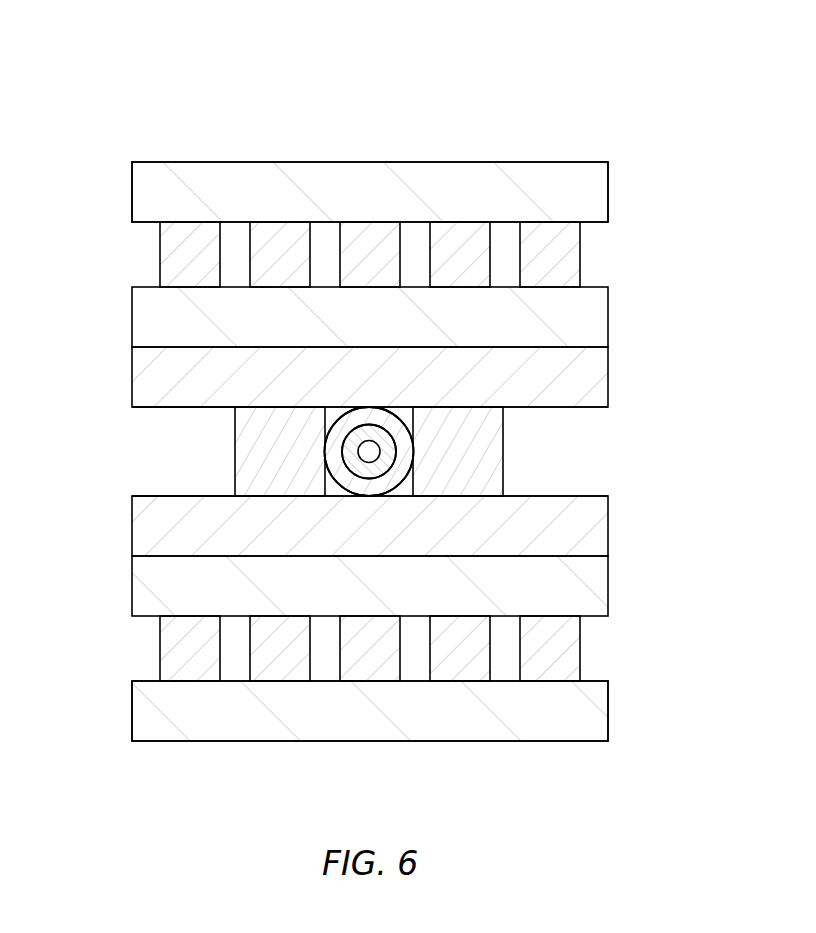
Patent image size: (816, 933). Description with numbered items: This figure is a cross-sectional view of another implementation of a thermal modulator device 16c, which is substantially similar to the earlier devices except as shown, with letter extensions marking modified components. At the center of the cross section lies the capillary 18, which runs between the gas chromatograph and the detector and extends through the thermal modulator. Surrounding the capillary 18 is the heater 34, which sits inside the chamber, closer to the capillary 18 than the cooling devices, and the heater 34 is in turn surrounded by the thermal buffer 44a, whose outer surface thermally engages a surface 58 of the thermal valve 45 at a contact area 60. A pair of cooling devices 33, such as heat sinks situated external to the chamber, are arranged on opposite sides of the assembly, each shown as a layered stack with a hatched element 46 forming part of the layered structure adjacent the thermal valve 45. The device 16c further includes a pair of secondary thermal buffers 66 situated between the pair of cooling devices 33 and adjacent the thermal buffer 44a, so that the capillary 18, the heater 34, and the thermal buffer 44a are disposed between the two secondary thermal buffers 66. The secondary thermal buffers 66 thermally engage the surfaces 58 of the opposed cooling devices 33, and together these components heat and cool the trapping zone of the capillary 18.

The device 16c is at (98, 68).
The cooling device 33 is at (118, 162).
The plate 46 is at (164, 350).
The thermal valve 45 is at (132, 405).
The surface 58 is at (164, 410).
The secondary thermal buffer 66 is at (235, 470).
The thermal buffer 44a is at (340, 417).
The heater 34 is at (388, 427).
The capillary 18 is at (375, 452).
The contact area 60 is at (372, 407).